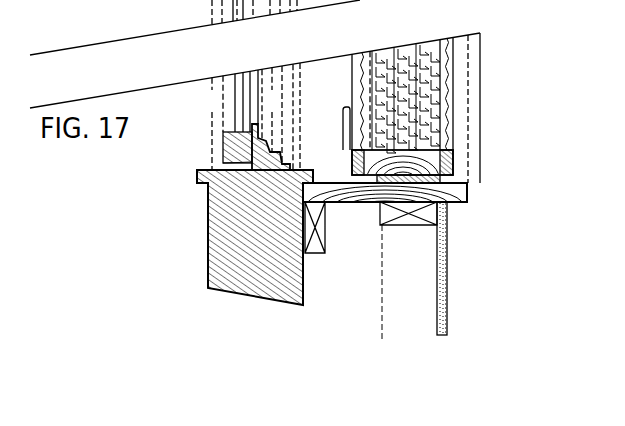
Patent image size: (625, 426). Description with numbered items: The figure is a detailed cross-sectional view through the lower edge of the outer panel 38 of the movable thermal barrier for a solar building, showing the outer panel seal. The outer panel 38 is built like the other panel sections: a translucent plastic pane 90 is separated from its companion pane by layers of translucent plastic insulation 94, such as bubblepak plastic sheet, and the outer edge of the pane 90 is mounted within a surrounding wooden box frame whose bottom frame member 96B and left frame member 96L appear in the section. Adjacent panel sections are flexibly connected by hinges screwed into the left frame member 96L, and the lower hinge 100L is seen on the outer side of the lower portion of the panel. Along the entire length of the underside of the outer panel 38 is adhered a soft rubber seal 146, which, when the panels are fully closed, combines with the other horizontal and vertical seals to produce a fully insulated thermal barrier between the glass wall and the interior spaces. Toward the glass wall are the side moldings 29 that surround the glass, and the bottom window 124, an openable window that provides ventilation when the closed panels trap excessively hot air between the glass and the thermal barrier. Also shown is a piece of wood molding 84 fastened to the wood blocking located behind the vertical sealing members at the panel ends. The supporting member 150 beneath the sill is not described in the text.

The side moldings 29 is at (228, 110).
The outer panel 38 is at (424, 42).
The wood molding 84 is at (485, 34).
The translucent plastic insulation 94 is at (475, 48).
The translucent plastic pane 90 is at (453, 93).
The left frame member 96L is at (448, 115).
The bottom frame member 96B is at (454, 140).
The lower hinge 100L is at (343, 110).
The bottom window 124 is at (326, 126).
The soft rubber seal 146 is at (443, 173).
The stud 150 is at (451, 237).